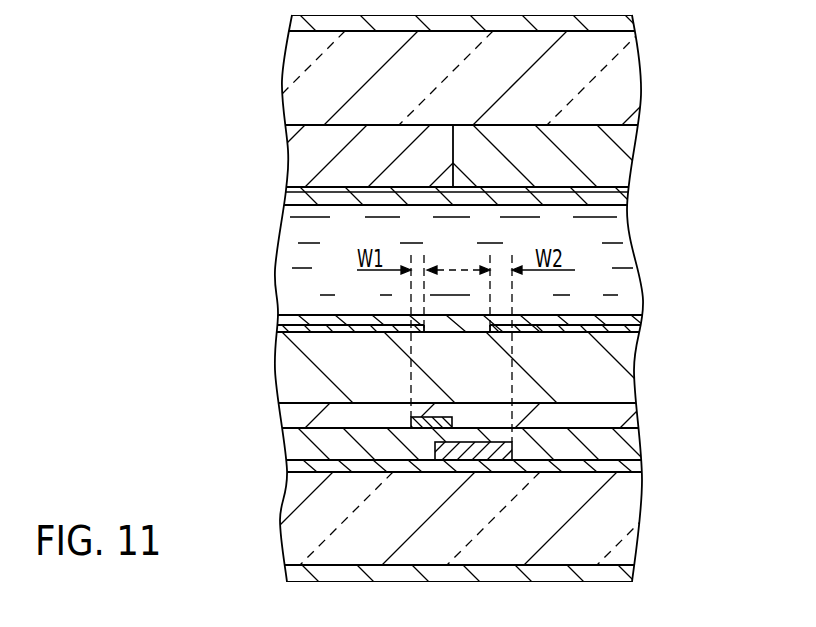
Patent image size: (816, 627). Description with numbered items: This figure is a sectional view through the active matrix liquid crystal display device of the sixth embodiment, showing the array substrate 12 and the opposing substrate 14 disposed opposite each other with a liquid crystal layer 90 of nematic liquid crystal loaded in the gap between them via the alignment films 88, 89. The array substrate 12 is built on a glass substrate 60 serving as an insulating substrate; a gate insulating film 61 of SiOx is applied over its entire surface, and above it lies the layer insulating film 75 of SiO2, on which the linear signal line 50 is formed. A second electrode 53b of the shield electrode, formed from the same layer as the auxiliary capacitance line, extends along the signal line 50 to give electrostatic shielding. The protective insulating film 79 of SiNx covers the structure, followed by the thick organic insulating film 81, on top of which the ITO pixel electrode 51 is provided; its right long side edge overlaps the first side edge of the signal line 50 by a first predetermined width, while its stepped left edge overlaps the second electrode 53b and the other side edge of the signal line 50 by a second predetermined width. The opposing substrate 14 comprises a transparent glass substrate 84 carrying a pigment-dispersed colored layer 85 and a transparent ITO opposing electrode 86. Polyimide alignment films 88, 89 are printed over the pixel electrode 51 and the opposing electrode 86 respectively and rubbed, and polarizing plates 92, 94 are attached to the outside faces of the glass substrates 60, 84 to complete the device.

The array substrate 12 is at (650, 463).
The opposing substrate 14 is at (650, 113).
The signal line 50 is at (440, 417).
The pixel electrode 51 is at (303, 328).
The second electrode 53b is at (452, 460).
The glass substrate 60 is at (292, 523).
The gate insulating film 61 is at (298, 467).
The layer insulating film 75 is at (297, 442).
The protective insulating film 79 is at (297, 412).
The organic insulating film 81 is at (290, 381).
The glass substrate 84 is at (291, 78).
The colored layer 85 is at (300, 149).
The opposing electrode 86 is at (298, 190).
The alignment film 88 is at (288, 326).
The alignment film 89 is at (296, 200).
The liquid crystal layer 90 is at (288, 258).
The polarizing plate 92 is at (298, 574).
The polarizing plate 94 is at (300, 23).